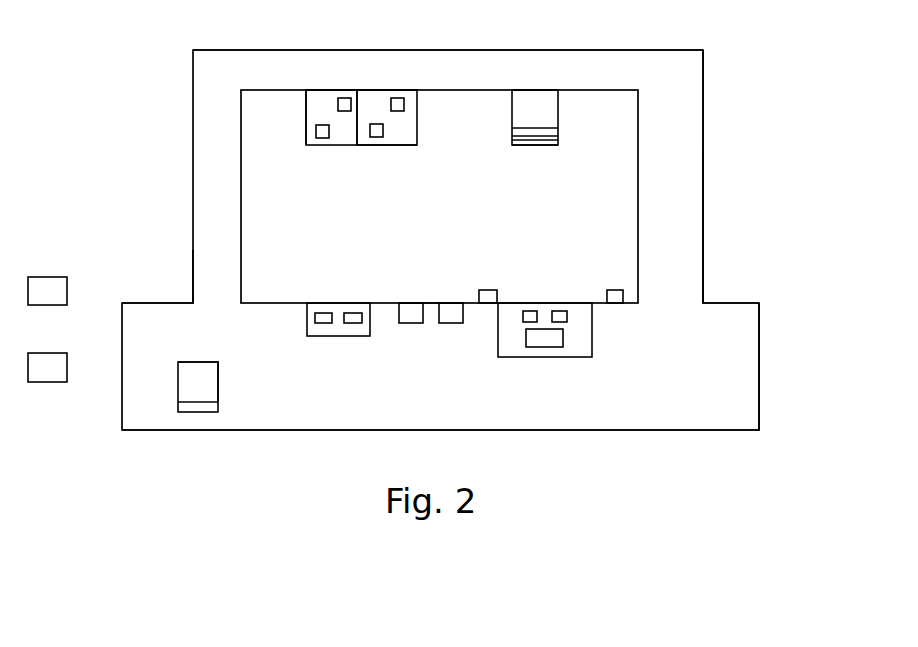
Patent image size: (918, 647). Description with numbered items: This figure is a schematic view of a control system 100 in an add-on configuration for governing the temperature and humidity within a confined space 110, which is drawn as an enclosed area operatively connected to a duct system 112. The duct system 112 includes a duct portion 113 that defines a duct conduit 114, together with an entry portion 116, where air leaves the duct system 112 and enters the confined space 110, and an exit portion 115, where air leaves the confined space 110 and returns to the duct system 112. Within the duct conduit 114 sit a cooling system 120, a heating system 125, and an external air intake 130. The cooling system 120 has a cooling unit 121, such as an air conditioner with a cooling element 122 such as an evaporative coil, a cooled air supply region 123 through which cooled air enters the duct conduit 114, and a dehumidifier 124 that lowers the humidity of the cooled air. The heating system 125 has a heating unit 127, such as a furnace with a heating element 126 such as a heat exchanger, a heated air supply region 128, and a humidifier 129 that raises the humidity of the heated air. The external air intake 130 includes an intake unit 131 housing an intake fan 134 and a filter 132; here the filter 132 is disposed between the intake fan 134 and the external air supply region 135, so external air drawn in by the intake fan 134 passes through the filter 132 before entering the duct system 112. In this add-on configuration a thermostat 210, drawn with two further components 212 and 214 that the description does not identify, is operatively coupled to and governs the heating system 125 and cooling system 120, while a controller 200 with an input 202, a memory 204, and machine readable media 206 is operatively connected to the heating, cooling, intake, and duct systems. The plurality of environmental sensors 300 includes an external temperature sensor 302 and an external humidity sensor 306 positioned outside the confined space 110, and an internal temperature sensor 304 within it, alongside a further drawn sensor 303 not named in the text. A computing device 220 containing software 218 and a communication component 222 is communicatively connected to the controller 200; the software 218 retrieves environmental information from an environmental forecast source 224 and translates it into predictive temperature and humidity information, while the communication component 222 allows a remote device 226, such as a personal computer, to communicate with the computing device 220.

The control system 100 is at (131, 64).
The confined space 110 is at (732, 403).
The duct system 112 is at (777, 127).
The duct portion 113 is at (703, 83).
The duct conduit 114 is at (667, 204).
The exit portion 115 is at (686, 297).
The entry portion 116 is at (205, 290).
The cooling system 120 is at (334, 168).
The cooling unit 121 is at (305, 128).
The cooling element 122 is at (323, 139).
The cooled air supply region 123 is at (324, 93).
The dehumidifier 124 is at (345, 112).
The heating system 125 is at (410, 163).
The heating element 126 is at (384, 131).
The heating unit 127 is at (387, 146).
The heated air supply region 128 is at (384, 95).
The humidifier 129 is at (404, 104).
The external air intake 130 is at (527, 156).
The intake unit 131 is at (542, 146).
The filter 132 is at (559, 130).
The intake fan 134 is at (560, 141).
The external air supply region 135 is at (534, 94).
The controller 200 is at (553, 358).
The input 202 is at (522, 316).
The memory 204 is at (568, 317).
The machine readable media 206 is at (564, 338).
The thermostat 210 is at (323, 337).
The battery 212 is at (315, 318).
The charger 214 is at (353, 324).
The software 218 is at (200, 368).
The computing device 220 is at (229, 373).
The communication component 222 is at (218, 405).
The environmental forecast source 224 is at (47, 306).
The remote device 226 is at (40, 383).
The plurality of environmental sensors 300 is at (447, 278).
The external temperature sensor 302 is at (488, 290).
The connector 303 is at (412, 324).
The internal temperature sensor 304 is at (451, 324).
The external humidity sensor 306 is at (614, 290).